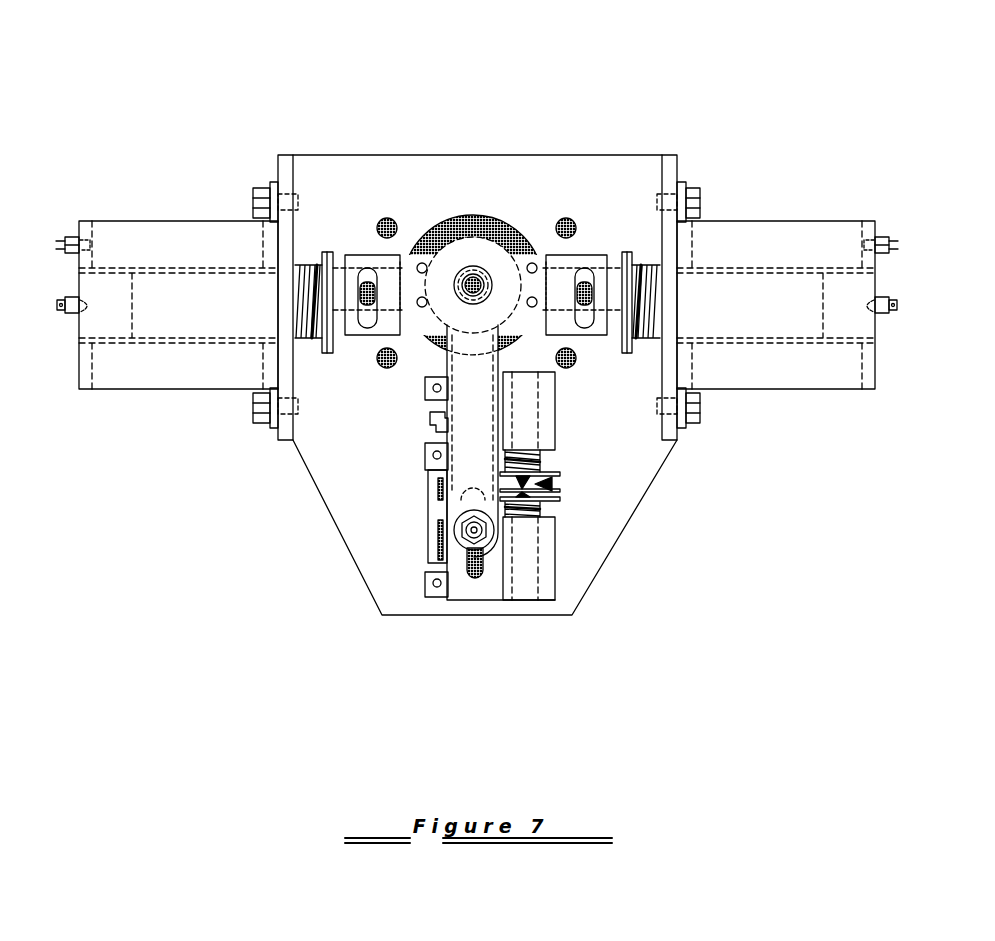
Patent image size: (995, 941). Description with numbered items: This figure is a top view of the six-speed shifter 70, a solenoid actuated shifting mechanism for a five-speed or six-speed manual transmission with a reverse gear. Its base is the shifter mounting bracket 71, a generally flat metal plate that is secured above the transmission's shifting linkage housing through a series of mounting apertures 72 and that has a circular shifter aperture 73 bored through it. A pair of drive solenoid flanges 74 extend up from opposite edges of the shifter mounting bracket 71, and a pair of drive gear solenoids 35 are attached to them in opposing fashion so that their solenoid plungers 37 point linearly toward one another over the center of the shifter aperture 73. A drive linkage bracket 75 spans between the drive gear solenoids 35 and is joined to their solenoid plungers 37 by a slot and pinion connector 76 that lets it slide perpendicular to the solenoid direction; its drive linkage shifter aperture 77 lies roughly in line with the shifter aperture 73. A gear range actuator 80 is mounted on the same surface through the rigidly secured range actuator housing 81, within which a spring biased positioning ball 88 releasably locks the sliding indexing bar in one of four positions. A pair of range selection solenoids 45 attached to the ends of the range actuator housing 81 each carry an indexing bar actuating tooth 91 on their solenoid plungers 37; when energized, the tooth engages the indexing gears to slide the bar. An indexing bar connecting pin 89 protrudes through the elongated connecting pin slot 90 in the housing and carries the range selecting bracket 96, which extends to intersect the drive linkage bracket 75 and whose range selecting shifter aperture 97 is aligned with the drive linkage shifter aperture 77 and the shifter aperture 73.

The six-speed shifter 70 is at (178, 95).
The shifter mounting bracket 71 is at (358, 157).
The mounting apertures 72 is at (566, 220).
The shifter aperture 73 is at (473, 277).
The drive solenoid flanges 74 is at (278, 158).
The drive linkage bracket 75 is at (437, 250).
The slot and pinion connector 76 is at (380, 220).
The drive linkage shifter aperture 77 is at (480, 267).
The range selecting shifter aperture 97 is at (468, 268).
The drive gear solenoids 35 is at (180, 227).
The solenoid plungers 37 is at (632, 255).
The range selection solenoids 45 is at (547, 415).
The range actuator housing 81 is at (425, 403).
The spring biased positioning ball 88 is at (428, 422).
The range selecting bracket 96 is at (465, 458).
The indexing bar connecting pin 89 is at (473, 538).
The connecting pin slot 90 is at (477, 578).
The indexing bar actuating tooth 91 is at (562, 498).
The gear range actuator 80 is at (592, 530).